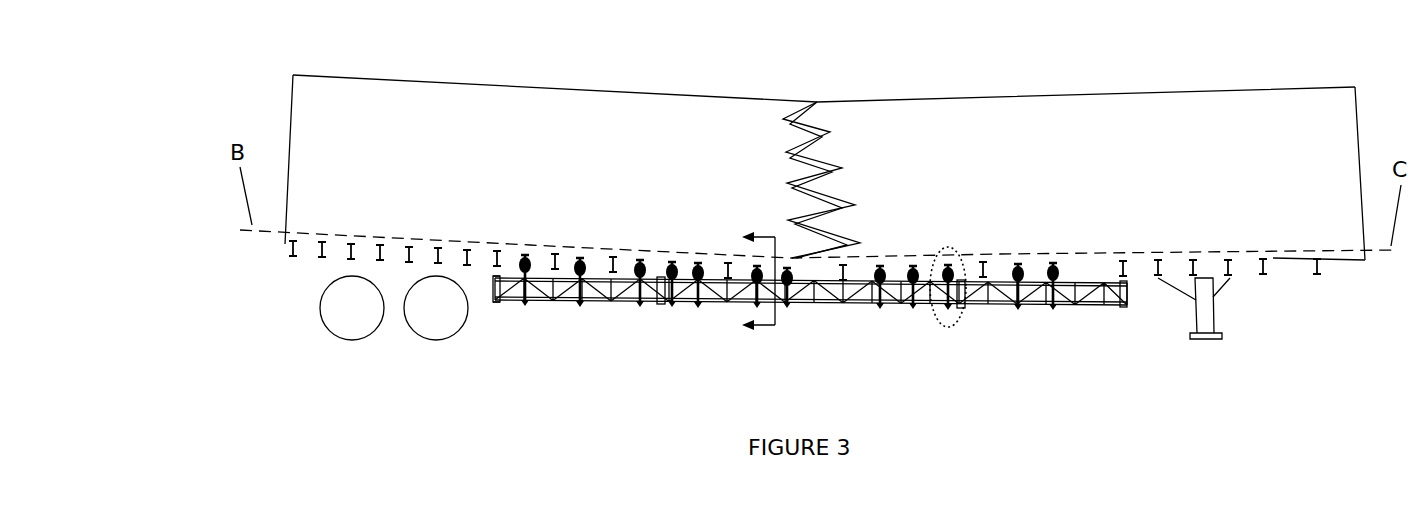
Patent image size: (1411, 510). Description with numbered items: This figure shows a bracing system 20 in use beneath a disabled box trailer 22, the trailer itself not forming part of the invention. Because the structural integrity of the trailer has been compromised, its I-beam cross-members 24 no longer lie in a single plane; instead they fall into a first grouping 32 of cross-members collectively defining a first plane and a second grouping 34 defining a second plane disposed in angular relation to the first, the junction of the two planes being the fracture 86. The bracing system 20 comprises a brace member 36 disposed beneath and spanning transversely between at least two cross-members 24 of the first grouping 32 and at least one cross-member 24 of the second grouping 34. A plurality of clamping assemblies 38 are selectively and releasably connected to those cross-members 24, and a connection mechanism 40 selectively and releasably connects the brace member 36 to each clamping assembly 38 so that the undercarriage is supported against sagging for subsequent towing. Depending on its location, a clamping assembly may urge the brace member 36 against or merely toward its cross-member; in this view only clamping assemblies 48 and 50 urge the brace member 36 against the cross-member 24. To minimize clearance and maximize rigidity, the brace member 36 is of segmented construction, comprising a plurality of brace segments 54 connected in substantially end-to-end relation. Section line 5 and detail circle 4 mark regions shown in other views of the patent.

The bracing system 20 is at (1150, 382).
The disabled box trailer 22 is at (617, 97).
The cross-members 24 is at (320, 260).
The first grouping of I-beam cross-members 32 is at (483, 193).
The second grouping of I-beam cross-members 34 is at (1125, 205).
The brace member 36 is at (493, 300).
The clamping assemblies 38 is at (527, 309).
The connection mechanism 40 is at (950, 314).
The detail view 4 is at (970, 318).
The section line 5 is at (758, 280).
The clamping assembly 48 is at (788, 308).
The clamping assembly 50 is at (860, 308).
The brace segments 54 is at (560, 302).
The fracture 86 is at (797, 172).